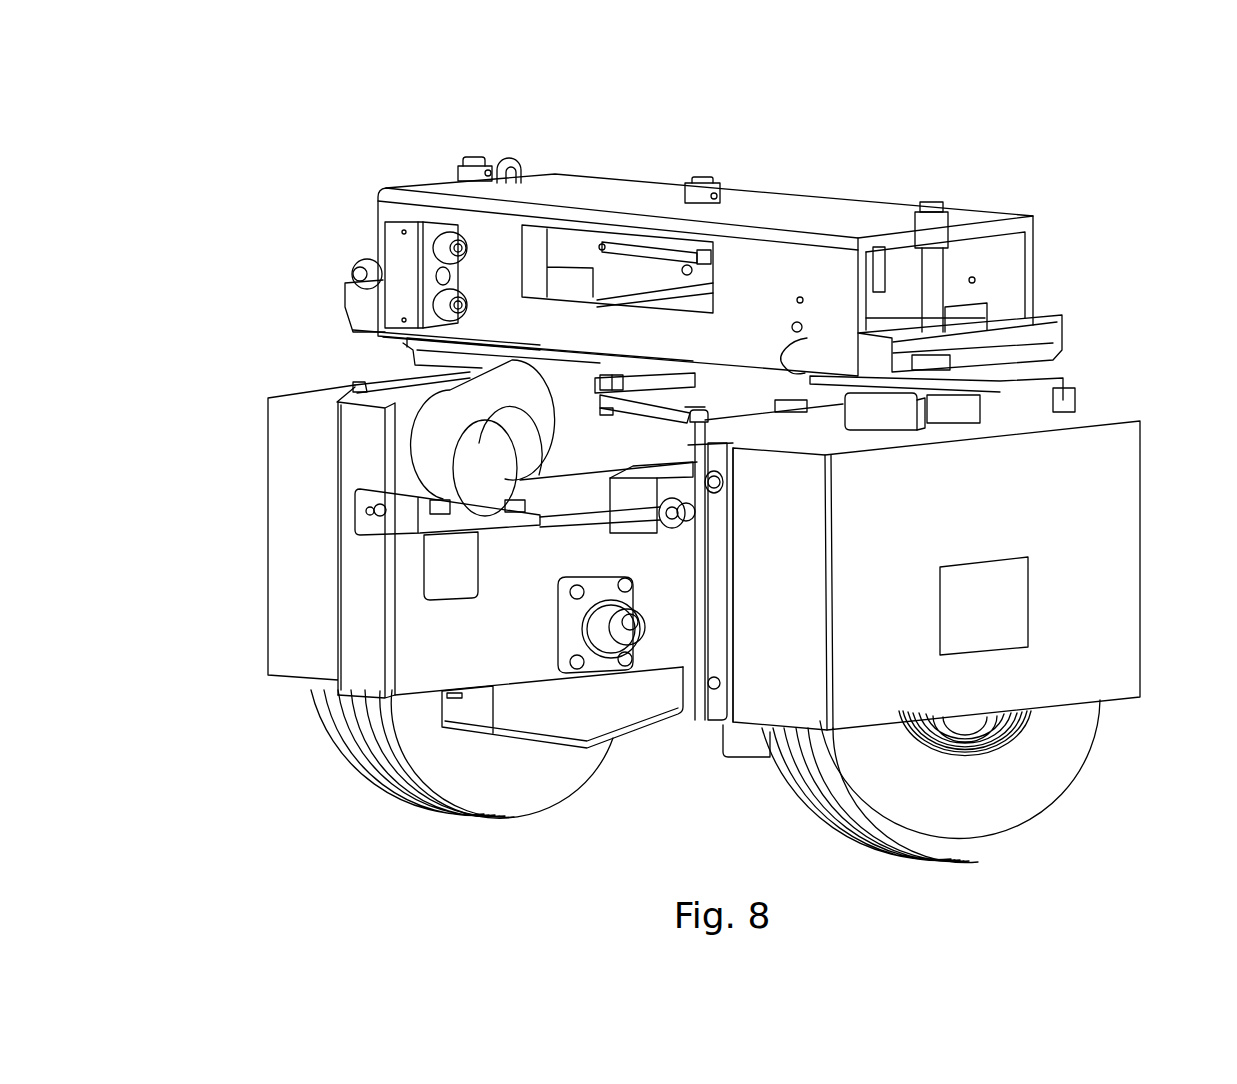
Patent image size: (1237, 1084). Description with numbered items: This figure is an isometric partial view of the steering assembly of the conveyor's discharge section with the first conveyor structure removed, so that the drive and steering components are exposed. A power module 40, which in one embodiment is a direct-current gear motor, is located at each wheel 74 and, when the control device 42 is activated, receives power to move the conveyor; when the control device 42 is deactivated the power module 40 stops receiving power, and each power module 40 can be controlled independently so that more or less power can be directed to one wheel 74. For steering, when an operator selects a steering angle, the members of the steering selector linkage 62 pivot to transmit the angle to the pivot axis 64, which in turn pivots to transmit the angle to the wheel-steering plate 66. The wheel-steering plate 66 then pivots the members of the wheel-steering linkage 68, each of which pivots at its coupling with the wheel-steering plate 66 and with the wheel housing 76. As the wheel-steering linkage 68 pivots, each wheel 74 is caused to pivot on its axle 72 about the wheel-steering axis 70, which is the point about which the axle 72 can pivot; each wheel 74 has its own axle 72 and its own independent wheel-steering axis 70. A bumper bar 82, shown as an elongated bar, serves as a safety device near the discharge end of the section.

The power module 40 is at (490, 372).
The control device 42 is at (410, 270).
The steering selector linkage 62 is at (651, 248).
The pivot axis 64 is at (698, 194).
The wheel-steering plate 66 is at (638, 387).
The wheel-steering linkage 68 is at (632, 408).
The wheel-steering axis 70 is at (473, 176).
The axle 72 is at (268, 630).
The wheel 74 is at (343, 760).
The wheel housing 76 is at (1130, 563).
The bumper bar 82 is at (372, 512).